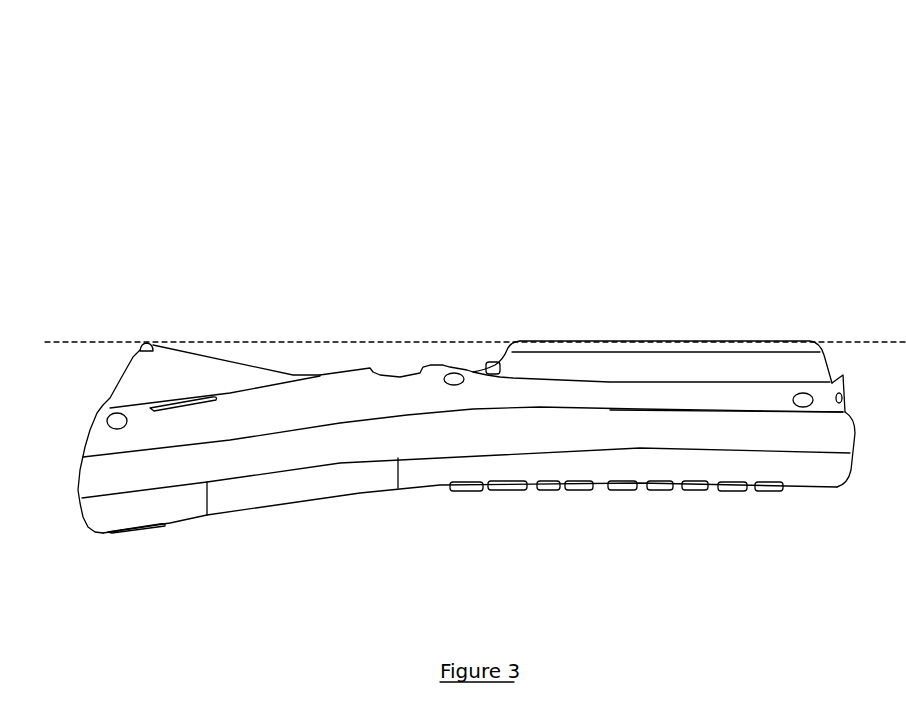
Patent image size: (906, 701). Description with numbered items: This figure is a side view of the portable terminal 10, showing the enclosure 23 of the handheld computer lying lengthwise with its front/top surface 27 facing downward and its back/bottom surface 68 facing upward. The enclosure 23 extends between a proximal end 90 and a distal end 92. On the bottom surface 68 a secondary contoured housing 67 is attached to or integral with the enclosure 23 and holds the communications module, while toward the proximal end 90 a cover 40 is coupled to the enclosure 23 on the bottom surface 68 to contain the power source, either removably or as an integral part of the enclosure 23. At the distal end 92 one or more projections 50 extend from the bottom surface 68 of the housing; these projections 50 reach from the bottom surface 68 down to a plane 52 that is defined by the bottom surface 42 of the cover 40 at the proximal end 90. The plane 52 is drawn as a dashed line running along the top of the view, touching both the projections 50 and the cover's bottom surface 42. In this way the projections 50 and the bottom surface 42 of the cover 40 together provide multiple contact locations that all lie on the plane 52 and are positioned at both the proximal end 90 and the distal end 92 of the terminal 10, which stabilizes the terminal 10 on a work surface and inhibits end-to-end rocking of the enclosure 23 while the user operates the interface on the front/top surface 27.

The portable terminal 10 is at (683, 105).
The enclosure 23 is at (415, 400).
The front/top surface 27 is at (525, 500).
The cover 40 is at (705, 368).
The bottom surface of the cover 42 is at (625, 338).
The projections 50 is at (147, 342).
The plane 52 is at (457, 338).
The secondary contoured housing 67 is at (192, 370).
The bottom surface 68 is at (381, 365).
The proximal end 90 is at (850, 352).
The distal end 92 is at (100, 362).